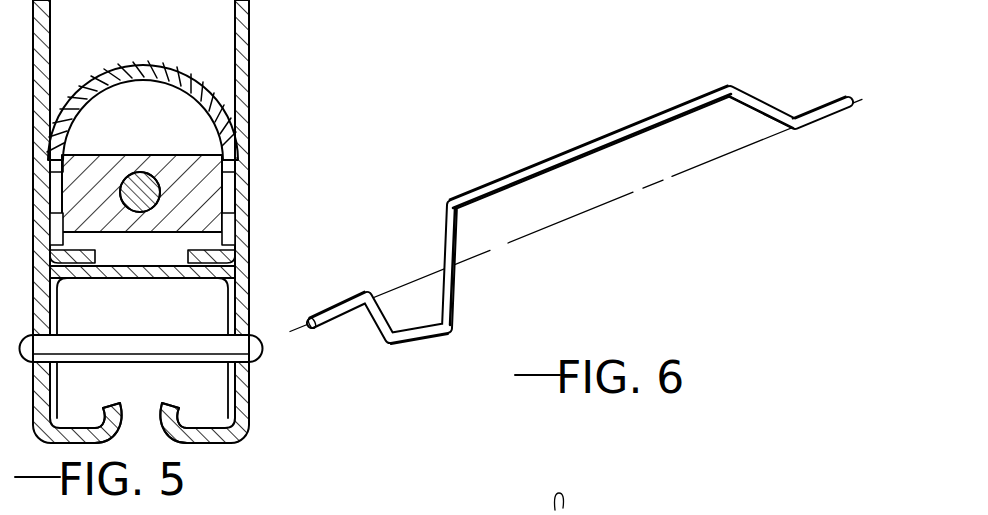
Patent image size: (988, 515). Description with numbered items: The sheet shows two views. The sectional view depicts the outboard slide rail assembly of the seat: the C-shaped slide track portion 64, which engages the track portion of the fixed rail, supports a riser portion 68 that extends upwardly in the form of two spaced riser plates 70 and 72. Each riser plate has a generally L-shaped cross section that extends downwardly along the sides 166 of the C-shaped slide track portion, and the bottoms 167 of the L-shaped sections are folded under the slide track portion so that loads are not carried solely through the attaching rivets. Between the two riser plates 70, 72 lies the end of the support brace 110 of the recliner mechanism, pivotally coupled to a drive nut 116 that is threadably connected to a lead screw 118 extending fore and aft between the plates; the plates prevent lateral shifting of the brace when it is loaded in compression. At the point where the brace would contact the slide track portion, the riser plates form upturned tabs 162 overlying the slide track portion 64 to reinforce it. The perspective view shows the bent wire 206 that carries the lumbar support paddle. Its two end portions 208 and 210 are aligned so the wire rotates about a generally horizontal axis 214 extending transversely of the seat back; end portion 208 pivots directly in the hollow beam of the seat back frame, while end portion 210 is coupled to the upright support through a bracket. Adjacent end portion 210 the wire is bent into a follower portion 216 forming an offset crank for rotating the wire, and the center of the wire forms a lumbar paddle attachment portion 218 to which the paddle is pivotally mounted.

In FIG. 5, the slide track portion 64 is at (250, 393).
In FIG. 5, the riser portion 68 is at (263, 350).
In FIG. 5, the riser plate 70 is at (31, 53).
In FIG. 5, the riser plate 72 is at (253, 47).
In FIG. 5, the support brace 110 is at (115, 62).
In FIG. 5, the drive nut 116 is at (97, 153).
In FIG. 5, the lead screw 118 is at (143, 171).
In FIG. 5, the upturned tabs 162 is at (200, 258).
In FIG. 5, the sides 166 is at (74, 297).
In FIG. 5, the bottoms 167 is at (195, 450).
In FIG. 6, the bent wire 206 is at (538, 160).
In FIG. 6, the end portion 208 is at (827, 128).
In FIG. 6, the end portion 210 is at (327, 298).
In FIG. 6, the horizontal axis 214 is at (540, 228).
In FIG. 6, the follower portion 216 is at (425, 352).
In FIG. 6, the lumbar paddle attachment portion 218 is at (597, 133).